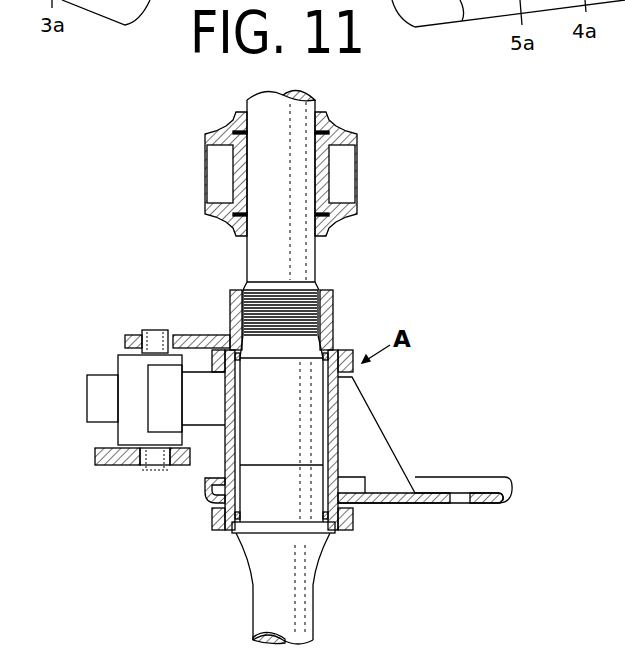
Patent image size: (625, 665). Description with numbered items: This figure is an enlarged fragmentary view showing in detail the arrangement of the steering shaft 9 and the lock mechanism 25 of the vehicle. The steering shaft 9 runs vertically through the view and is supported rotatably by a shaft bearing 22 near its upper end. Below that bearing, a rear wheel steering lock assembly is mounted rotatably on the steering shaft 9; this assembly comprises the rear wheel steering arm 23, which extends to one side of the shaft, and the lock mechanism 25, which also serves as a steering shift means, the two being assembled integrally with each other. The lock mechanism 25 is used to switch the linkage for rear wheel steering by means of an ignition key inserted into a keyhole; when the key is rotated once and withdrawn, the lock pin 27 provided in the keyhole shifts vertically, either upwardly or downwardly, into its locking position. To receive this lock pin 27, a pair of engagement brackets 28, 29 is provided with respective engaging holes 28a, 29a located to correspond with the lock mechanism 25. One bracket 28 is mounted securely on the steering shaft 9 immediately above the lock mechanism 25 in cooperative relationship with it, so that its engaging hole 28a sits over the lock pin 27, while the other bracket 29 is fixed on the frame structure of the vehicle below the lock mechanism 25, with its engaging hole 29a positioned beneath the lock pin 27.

The steering shaft 9 is at (318, 260).
The bearing 22 is at (340, 216).
The rear wheel steering arm 23 is at (500, 504).
The lock mechanism 25 is at (126, 368).
The lock pin 27 is at (155, 330).
The engagement bracket 28 is at (196, 335).
The engaging hole 28a is at (140, 334).
The engagement bracket 29 is at (103, 466).
The engaging hole 29a is at (171, 466).